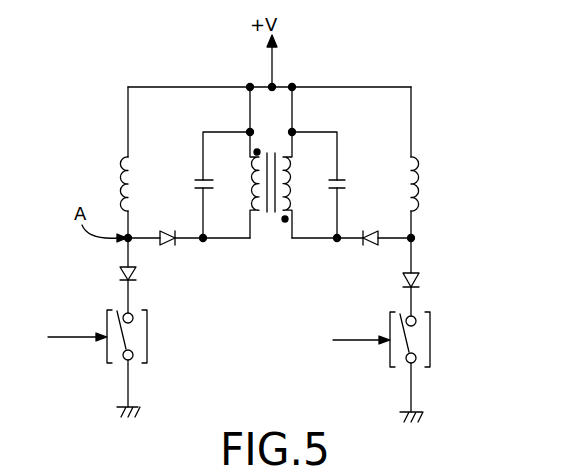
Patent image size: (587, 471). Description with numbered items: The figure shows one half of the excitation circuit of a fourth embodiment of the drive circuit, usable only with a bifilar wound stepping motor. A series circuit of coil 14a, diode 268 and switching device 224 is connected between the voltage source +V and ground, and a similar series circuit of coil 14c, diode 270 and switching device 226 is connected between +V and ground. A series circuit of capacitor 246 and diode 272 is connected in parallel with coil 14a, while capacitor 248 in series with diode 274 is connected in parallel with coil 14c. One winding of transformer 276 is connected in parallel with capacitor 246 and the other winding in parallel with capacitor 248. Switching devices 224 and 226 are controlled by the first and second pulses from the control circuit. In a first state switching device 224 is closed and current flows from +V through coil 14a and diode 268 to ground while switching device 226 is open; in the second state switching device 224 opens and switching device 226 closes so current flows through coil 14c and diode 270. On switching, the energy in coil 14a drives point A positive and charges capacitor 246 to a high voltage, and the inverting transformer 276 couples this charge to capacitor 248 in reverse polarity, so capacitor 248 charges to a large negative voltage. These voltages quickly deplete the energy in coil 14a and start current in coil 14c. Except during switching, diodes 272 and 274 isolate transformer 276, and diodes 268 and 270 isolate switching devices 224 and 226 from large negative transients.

The coil 14a is at (120, 164).
The coil 14c is at (419, 178).
The capacitor 246 is at (197, 181).
The capacitor 248 is at (345, 180).
The diode 272 is at (166, 232).
The diode 274 is at (378, 236).
The diode 268 is at (136, 278).
The diode 270 is at (419, 280).
The transformer 276 is at (266, 221).
The switching device 224 is at (149, 356).
The switching device 226 is at (432, 354).